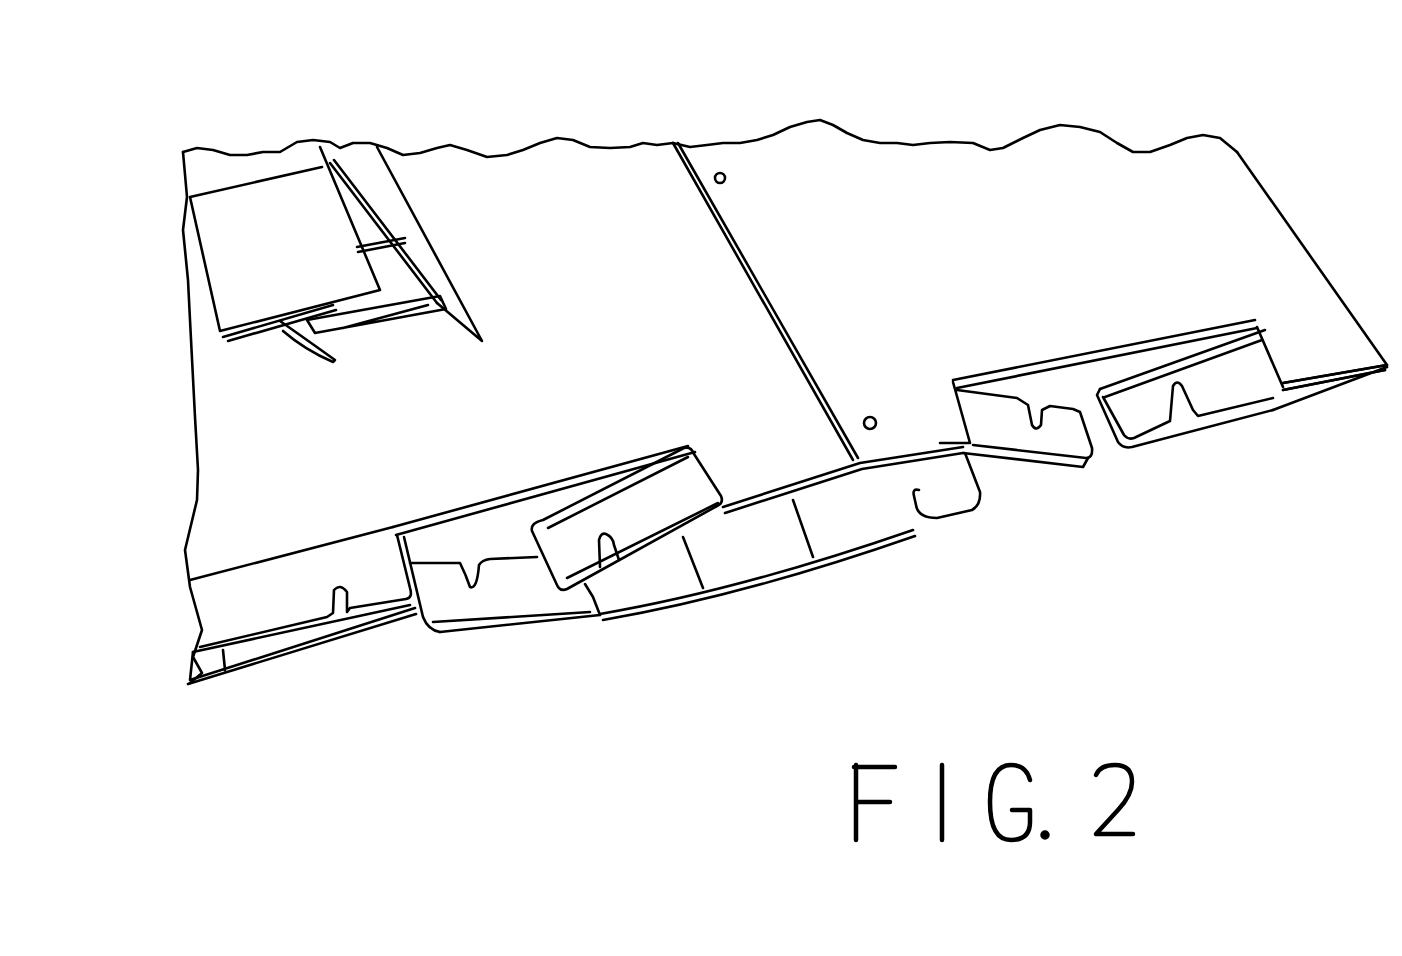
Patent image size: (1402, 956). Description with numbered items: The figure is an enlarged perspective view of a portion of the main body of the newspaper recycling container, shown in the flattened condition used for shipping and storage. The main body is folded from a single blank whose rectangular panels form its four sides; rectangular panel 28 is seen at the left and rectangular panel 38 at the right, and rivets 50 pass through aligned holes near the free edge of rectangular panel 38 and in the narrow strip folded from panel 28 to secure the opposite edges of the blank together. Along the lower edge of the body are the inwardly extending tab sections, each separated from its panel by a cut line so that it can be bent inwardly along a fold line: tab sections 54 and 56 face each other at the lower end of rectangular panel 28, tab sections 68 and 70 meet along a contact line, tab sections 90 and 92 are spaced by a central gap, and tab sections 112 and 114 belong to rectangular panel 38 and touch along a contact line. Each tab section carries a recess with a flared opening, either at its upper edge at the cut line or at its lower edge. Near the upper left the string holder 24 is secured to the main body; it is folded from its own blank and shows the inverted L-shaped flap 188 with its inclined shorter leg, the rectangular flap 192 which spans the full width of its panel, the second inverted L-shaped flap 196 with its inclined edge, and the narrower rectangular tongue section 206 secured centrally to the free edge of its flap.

The rectangular panel 28 is at (603, 167).
The rectangular panel 38 is at (897, 173).
The rivets 50 is at (727, 180).
The string holder 24 is at (327, 291).
The rectangular flap 192 is at (212, 277).
The inverted L-shaped flap 196 is at (467, 299).
The rectangular tongue section 206 is at (383, 327).
The inverted L-shaped flap 188 is at (303, 347).
The tab section 70 is at (317, 645).
The tab section 54 is at (262, 610).
The tab section 68 is at (507, 610).
The tab section 56 is at (647, 527).
The tab section 92 is at (957, 497).
The tab section 112 is at (1057, 457).
The tab section 90 is at (1185, 433).
The tab section 114 is at (1239, 378).